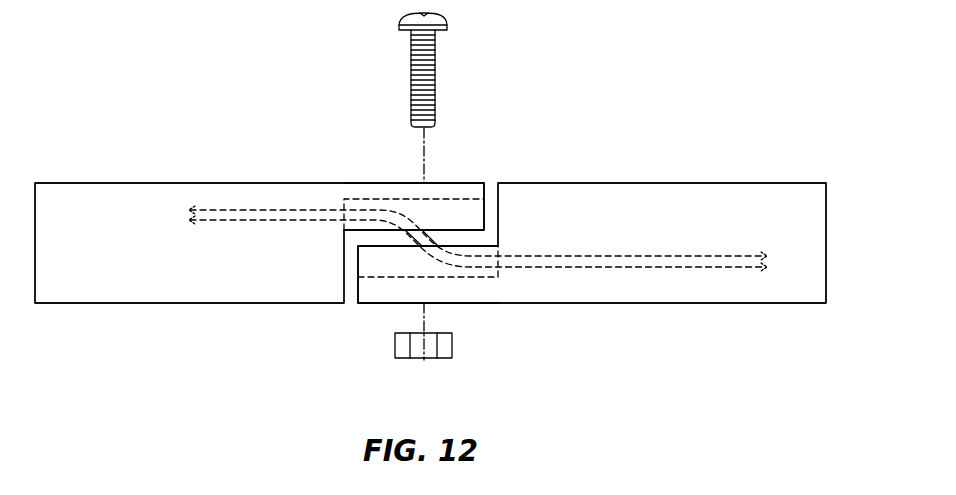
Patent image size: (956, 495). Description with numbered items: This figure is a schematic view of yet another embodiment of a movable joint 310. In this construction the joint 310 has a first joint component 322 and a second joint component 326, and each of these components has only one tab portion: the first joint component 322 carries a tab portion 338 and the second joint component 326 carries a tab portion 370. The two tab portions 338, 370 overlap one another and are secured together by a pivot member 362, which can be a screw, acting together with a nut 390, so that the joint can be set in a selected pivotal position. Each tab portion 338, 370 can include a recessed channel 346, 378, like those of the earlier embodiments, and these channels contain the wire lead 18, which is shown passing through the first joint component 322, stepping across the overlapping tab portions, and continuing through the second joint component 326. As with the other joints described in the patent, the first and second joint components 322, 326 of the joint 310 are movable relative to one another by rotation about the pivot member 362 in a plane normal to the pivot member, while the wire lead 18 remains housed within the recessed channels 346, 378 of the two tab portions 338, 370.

The joint embodiment 310 is at (582, 92).
The first joint component 322 is at (93, 283).
The second joint component 326 is at (735, 285).
The tab portion 338 is at (457, 192).
The recessed channel 346 is at (374, 191).
The tab portion 370 is at (465, 288).
The recessed channel 378 is at (387, 283).
The wire lead 18 is at (549, 262).
The pivot member 362 is at (411, 58).
The nut 390 is at (423, 354).